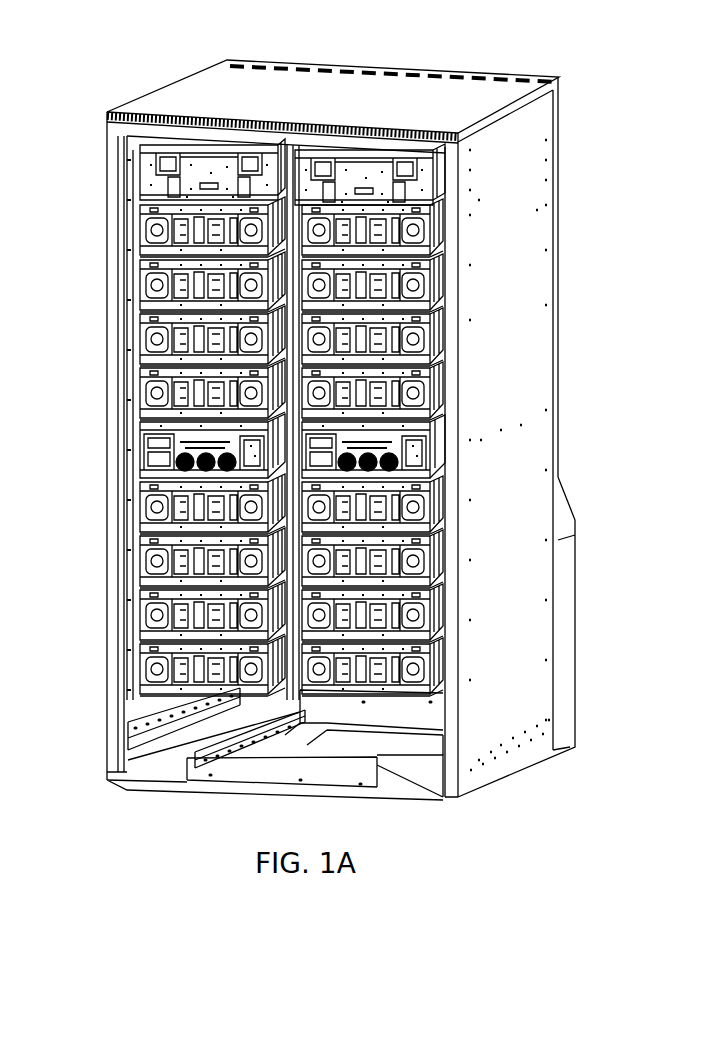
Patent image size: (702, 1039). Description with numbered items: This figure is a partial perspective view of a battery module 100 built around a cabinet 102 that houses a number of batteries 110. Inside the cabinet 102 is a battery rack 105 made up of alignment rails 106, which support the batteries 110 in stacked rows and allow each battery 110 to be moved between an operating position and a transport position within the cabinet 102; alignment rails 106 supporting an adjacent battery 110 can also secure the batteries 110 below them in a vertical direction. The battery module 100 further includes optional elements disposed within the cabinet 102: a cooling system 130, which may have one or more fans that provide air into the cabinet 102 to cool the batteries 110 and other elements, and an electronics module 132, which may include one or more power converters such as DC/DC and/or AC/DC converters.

The battery module 100 is at (357, 28).
The cabinet 102 is at (542, 203).
The battery rack 105 is at (55, 222).
The alignment rails 106 is at (143, 264).
The battery 110 is at (143, 650).
The cooling system 130 is at (148, 462).
The electronics module 132 is at (142, 176).